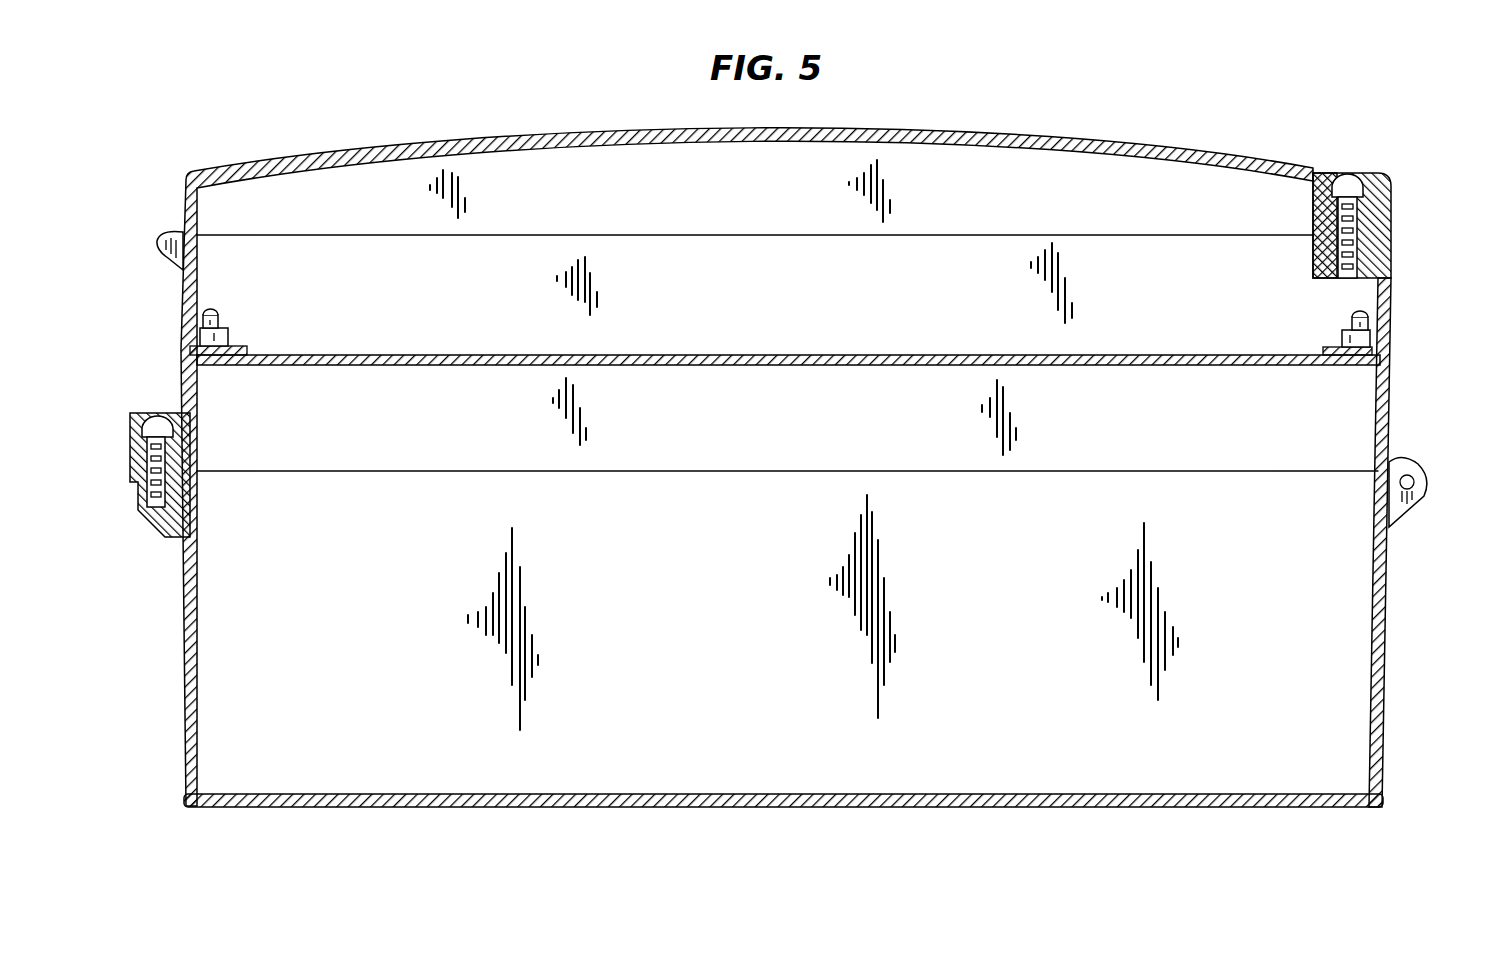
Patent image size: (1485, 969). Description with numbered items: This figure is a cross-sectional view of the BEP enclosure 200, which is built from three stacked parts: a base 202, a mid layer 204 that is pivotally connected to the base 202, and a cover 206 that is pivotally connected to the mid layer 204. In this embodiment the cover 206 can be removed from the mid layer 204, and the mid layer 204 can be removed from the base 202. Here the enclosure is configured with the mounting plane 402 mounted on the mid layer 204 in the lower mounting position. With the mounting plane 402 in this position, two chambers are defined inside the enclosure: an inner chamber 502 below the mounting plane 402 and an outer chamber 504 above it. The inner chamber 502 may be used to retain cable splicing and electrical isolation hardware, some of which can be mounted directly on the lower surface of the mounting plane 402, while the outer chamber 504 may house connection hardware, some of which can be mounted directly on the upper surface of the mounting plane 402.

The BEP enclosure 200 is at (1316, 124).
The base 202 is at (783, 807).
The mid layer 204 is at (1391, 298).
The cover 206 is at (310, 152).
The mounting plane 402 is at (1298, 367).
The inner chamber 502 is at (803, 616).
The outer chamber 504 is at (804, 313).